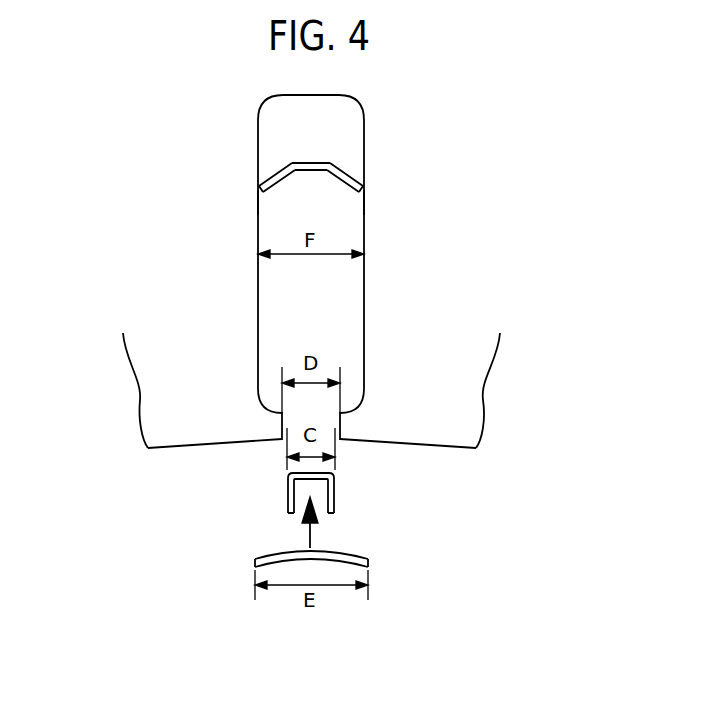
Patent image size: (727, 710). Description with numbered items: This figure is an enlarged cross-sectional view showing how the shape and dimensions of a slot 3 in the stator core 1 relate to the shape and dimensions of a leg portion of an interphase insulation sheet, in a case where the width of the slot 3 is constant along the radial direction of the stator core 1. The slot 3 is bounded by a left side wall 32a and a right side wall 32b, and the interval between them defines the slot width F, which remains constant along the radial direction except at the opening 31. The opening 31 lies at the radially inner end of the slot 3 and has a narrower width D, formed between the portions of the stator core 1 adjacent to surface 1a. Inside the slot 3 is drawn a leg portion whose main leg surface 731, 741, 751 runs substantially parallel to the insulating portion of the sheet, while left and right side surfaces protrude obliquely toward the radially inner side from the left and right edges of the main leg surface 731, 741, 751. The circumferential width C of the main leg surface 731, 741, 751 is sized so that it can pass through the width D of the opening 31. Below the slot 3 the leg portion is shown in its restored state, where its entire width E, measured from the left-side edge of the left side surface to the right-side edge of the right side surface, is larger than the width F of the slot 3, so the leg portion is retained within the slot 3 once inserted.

The stator core 1 is at (325, 420).
The mounting surface 1a is at (186, 437).
The slot 3 is at (310, 281).
The opening 31 is at (341, 430).
The left side wall 32a is at (260, 197).
The right side wall 32b is at (363, 198).
The main leg surface 731 is at (401, 151).
The main leg surface 741 is at (401, 151).
The main leg surface 751 is at (313, 163).